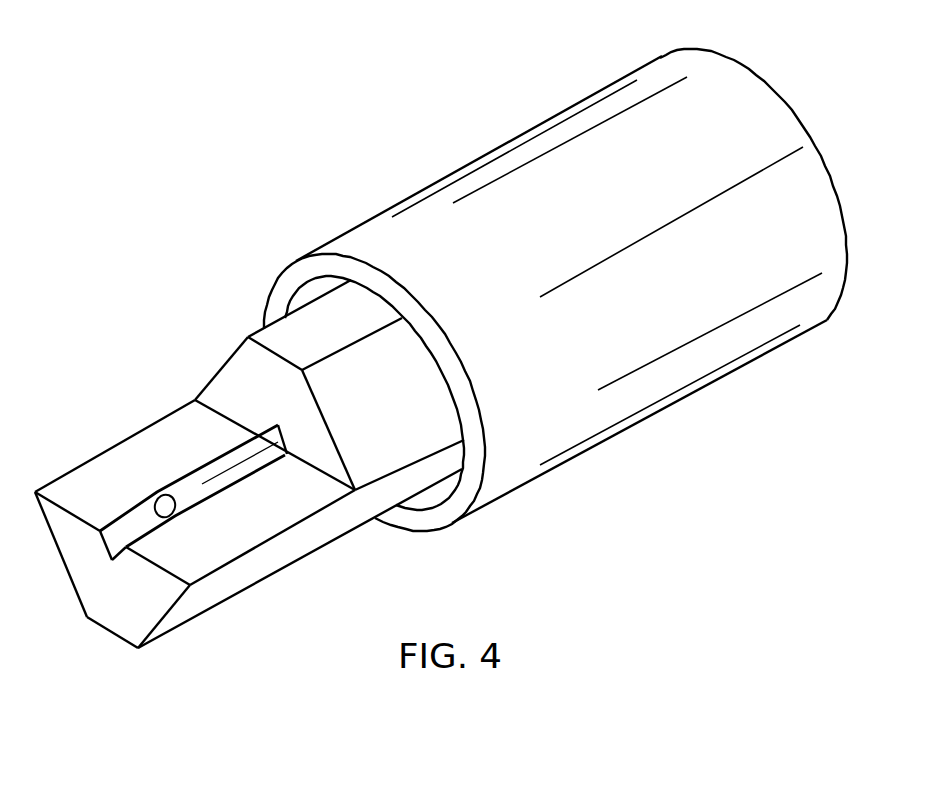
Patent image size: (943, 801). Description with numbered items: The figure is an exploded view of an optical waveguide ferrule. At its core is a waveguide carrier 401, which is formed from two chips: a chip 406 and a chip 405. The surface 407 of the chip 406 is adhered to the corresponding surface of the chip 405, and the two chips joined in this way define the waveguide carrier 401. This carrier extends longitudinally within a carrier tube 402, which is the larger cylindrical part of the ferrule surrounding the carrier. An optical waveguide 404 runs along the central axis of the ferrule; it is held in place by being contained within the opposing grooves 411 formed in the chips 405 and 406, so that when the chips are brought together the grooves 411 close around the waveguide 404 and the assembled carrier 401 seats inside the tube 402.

The waveguide carrier 401 is at (213, 374).
The carrier tube 402 is at (368, 220).
The optical waveguide 404 is at (196, 478).
The chip 405 is at (372, 448).
The chip 406 is at (288, 543).
The surface 407 is at (198, 562).
The opposing grooves 411 is at (123, 527).